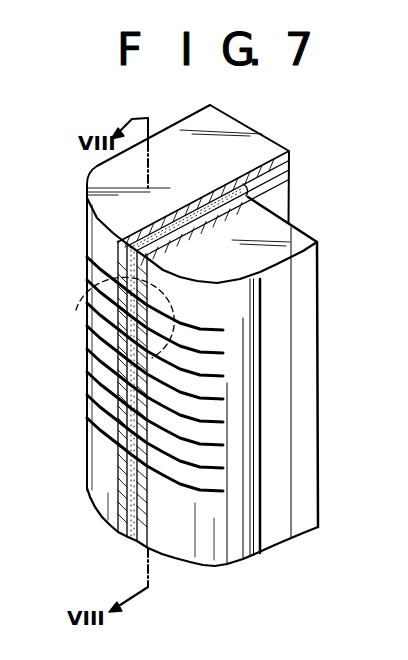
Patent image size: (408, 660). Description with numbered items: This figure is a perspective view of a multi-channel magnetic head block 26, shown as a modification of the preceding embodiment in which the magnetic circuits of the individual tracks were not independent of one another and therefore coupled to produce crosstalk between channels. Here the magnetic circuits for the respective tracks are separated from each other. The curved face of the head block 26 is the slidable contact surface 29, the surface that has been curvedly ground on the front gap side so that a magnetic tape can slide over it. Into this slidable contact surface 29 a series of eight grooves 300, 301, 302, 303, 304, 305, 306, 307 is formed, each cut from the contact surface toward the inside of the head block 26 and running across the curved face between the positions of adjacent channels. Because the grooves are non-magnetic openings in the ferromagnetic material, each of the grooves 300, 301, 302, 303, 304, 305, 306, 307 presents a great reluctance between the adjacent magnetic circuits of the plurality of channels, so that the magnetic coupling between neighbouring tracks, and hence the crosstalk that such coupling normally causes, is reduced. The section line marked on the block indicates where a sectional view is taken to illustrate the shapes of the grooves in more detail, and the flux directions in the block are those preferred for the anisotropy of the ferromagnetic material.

The head block 26 is at (375, 320).
The slidable contact surface 29 is at (214, 540).
The groove 300 is at (224, 328).
The groove 301 is at (224, 351).
The groove 302 is at (224, 374).
The groove 303 is at (224, 397).
The groove 304 is at (224, 420).
The groove 305 is at (224, 443).
The groove 306 is at (224, 466).
The groove 307 is at (224, 489).